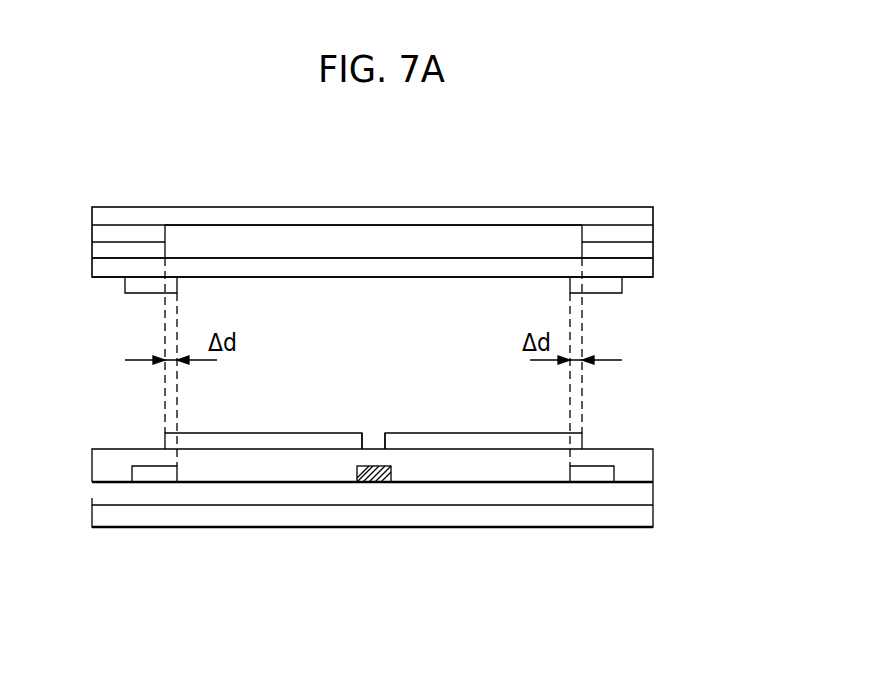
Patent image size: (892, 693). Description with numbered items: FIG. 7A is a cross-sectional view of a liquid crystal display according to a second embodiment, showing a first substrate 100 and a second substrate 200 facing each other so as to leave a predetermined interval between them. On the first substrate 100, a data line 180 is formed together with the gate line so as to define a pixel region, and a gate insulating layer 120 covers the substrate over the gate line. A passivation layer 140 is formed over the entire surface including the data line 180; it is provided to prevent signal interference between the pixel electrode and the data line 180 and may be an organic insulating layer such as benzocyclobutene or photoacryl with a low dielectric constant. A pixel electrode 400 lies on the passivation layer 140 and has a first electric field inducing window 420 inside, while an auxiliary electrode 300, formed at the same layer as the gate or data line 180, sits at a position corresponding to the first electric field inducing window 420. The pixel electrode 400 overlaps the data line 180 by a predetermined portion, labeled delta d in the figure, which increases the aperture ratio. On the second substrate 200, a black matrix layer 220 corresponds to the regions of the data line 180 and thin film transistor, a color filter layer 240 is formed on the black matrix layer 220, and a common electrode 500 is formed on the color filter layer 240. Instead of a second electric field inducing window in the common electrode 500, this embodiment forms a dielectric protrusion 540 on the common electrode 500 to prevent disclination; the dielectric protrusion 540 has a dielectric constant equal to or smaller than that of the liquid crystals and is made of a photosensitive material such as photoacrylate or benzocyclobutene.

The first substrate 100 is at (653, 512).
The gate insulating layer 120 is at (100, 488).
The passivation layer 140 is at (653, 465).
The data line 180 is at (157, 475).
The second substrate 200 is at (655, 217).
The black matrix layer 220 is at (100, 233).
The color filter layer 240 is at (455, 236).
The auxiliary electrode 300 is at (377, 478).
The pixel electrode 400 is at (507, 437).
The first electric field inducing window 420 is at (372, 437).
The common electrode 500 is at (372, 265).
The dielectric protrusion 540 is at (612, 283).